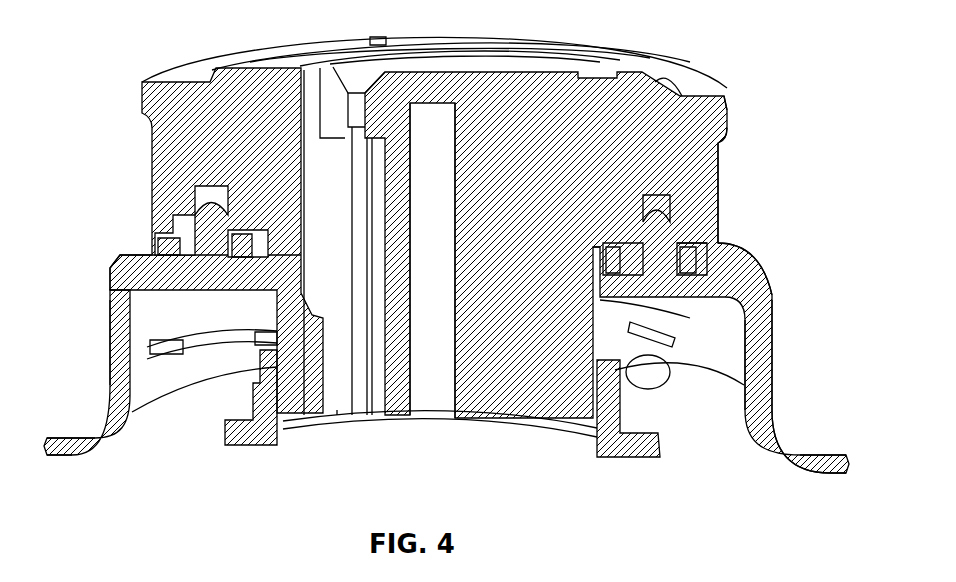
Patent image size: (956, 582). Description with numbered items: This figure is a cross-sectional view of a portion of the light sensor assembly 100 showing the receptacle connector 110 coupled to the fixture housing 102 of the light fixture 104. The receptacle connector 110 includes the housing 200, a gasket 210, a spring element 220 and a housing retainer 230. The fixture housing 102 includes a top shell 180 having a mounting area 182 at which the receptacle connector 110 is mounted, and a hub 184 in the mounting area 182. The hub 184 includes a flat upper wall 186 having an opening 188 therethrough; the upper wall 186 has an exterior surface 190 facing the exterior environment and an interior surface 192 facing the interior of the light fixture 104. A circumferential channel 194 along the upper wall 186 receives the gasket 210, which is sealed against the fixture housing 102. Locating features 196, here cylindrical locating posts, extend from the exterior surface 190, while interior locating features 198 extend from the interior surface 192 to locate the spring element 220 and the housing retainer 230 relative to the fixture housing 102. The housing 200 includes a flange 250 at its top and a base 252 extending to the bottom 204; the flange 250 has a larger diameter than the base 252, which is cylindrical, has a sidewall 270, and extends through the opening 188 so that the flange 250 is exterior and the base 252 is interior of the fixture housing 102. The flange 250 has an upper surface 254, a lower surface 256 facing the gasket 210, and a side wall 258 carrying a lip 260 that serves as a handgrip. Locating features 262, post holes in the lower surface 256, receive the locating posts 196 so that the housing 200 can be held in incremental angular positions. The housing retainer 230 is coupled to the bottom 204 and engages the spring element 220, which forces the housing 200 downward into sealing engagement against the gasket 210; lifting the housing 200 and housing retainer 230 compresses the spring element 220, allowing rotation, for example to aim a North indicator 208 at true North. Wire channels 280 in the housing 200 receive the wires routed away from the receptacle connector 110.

The light sensor assembly 100 is at (752, 45).
The fixture housing 102 is at (801, 403).
The light fixture 104 is at (803, 467).
The receptacle connector 110 is at (148, 72).
The top shell 180 is at (73, 448).
The mounting area 182 is at (141, 253).
The hub 184 is at (113, 385).
The upper wall 186 is at (160, 280).
The opening 188 is at (596, 268).
The exterior surface 190 is at (740, 267).
The interior surface 192 is at (745, 312).
The circumferential channel 194 is at (704, 268).
The locating features 196 is at (163, 218).
The interior locating features 198 is at (650, 367).
The housing 200 is at (182, 152).
The bottom 204 is at (314, 428).
The North indicator 208 is at (378, 40).
The gasket 210 is at (155, 240).
The spring element 220 is at (173, 337).
The housing retainer 230 is at (255, 445).
The flange 250 is at (682, 162).
The base 252 is at (522, 397).
The upper surface 254 is at (693, 80).
The lower surface 256 is at (727, 102).
The side wall 258 is at (722, 175).
The lip 260 is at (727, 128).
The locating features 262 is at (209, 191).
The sidewall 270 is at (260, 360).
The wire channels 280 is at (337, 400).